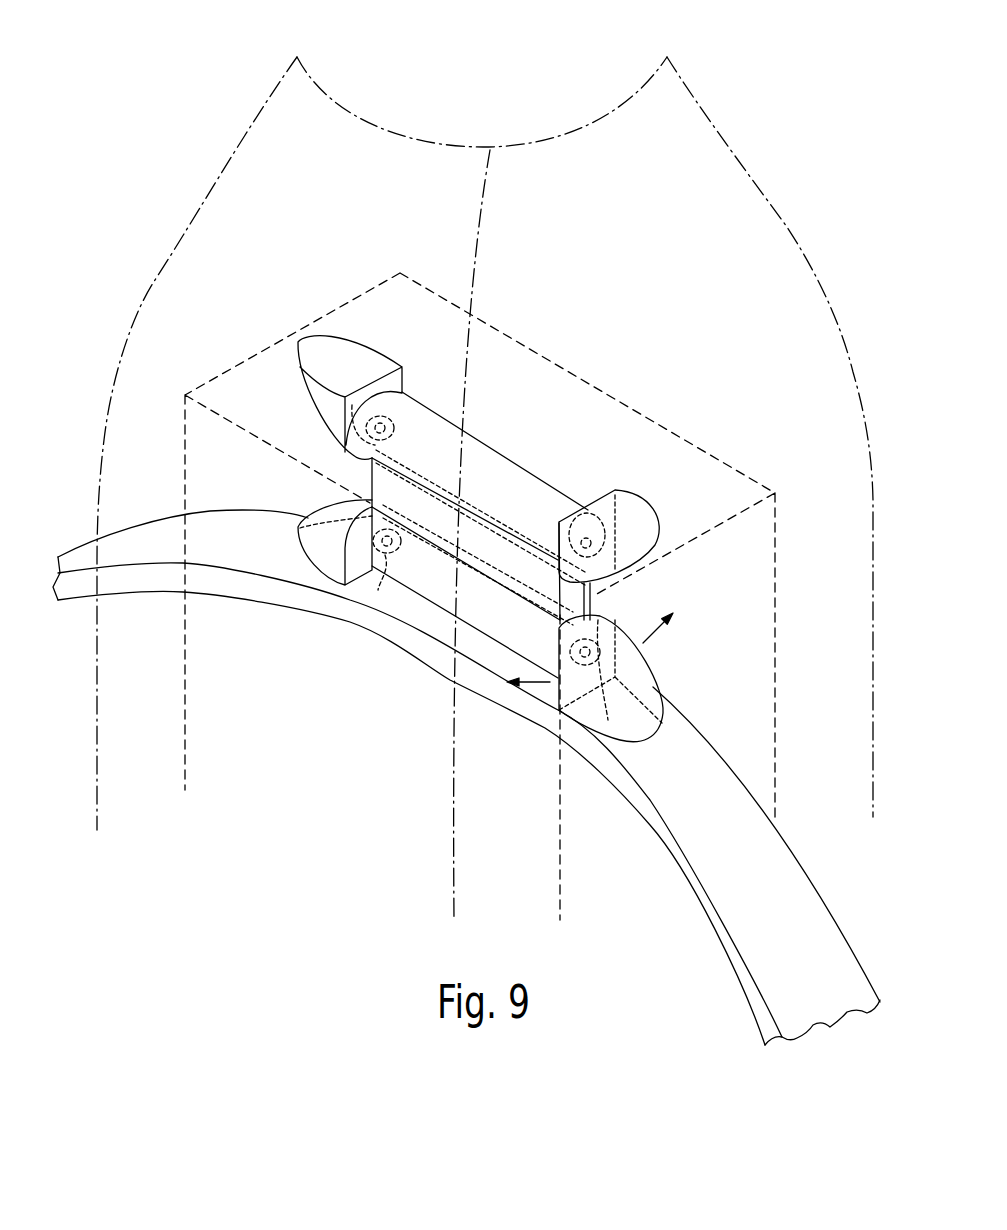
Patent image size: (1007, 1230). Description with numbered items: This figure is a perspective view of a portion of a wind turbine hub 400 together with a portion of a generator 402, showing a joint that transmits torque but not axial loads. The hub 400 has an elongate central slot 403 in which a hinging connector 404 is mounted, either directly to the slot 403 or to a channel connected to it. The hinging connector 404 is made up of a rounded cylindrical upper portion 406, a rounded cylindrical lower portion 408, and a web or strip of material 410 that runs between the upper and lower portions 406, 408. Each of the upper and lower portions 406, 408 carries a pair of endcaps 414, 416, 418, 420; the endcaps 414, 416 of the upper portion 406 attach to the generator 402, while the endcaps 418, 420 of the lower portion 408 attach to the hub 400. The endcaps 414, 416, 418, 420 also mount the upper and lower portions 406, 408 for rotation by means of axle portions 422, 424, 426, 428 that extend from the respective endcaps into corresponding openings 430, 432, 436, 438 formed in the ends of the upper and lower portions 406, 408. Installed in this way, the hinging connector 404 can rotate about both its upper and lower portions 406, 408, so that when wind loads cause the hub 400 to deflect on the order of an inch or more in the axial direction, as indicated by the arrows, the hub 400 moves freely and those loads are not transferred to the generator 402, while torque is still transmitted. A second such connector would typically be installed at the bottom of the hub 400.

The hub 400 is at (143, 285).
The generator 402 is at (789, 867).
The elongate central slot 403 is at (650, 418).
The hinging connector 404 is at (500, 452).
The upper portion 406 is at (428, 420).
The lower portion 408 is at (440, 598).
The web 410 is at (367, 470).
The endcap 414 is at (370, 362).
The endcap 416 is at (637, 522).
The endcap 418 is at (312, 543).
The endcap 420 is at (635, 669).
The axle portion 422 is at (347, 428).
The axle portion 424 is at (592, 515).
The axle portion 426 is at (396, 565).
The axle portion 428 is at (565, 638).
The opening 430 is at (383, 447).
The opening 432 is at (553, 543).
The opening 436 is at (388, 568).
The opening 438 is at (608, 720).